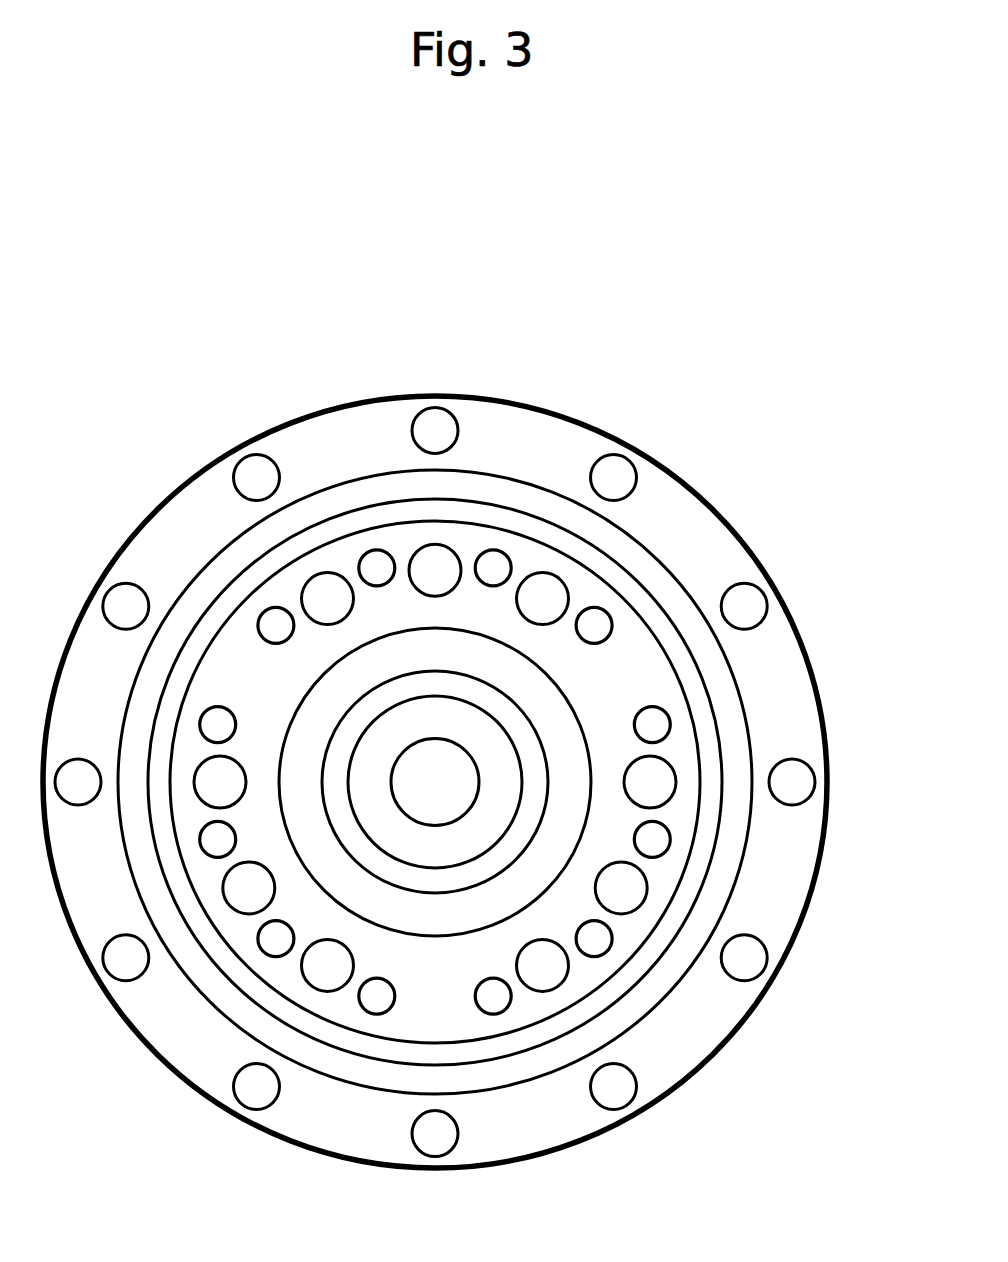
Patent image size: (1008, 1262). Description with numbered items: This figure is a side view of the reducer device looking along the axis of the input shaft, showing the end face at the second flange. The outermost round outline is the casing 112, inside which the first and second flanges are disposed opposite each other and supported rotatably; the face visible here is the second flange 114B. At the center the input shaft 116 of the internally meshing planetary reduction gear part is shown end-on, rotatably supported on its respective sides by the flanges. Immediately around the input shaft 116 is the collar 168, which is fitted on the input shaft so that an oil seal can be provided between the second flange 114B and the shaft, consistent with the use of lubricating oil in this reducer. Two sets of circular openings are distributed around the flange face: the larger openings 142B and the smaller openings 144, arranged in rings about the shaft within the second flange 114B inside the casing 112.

The casing 112 is at (715, 535).
The second flange 114B is at (660, 880).
The input shaft 116 is at (444, 846).
The mounting holes 142B is at (435, 552).
The small holes 144 is at (380, 568).
The collar 168 is at (387, 698).